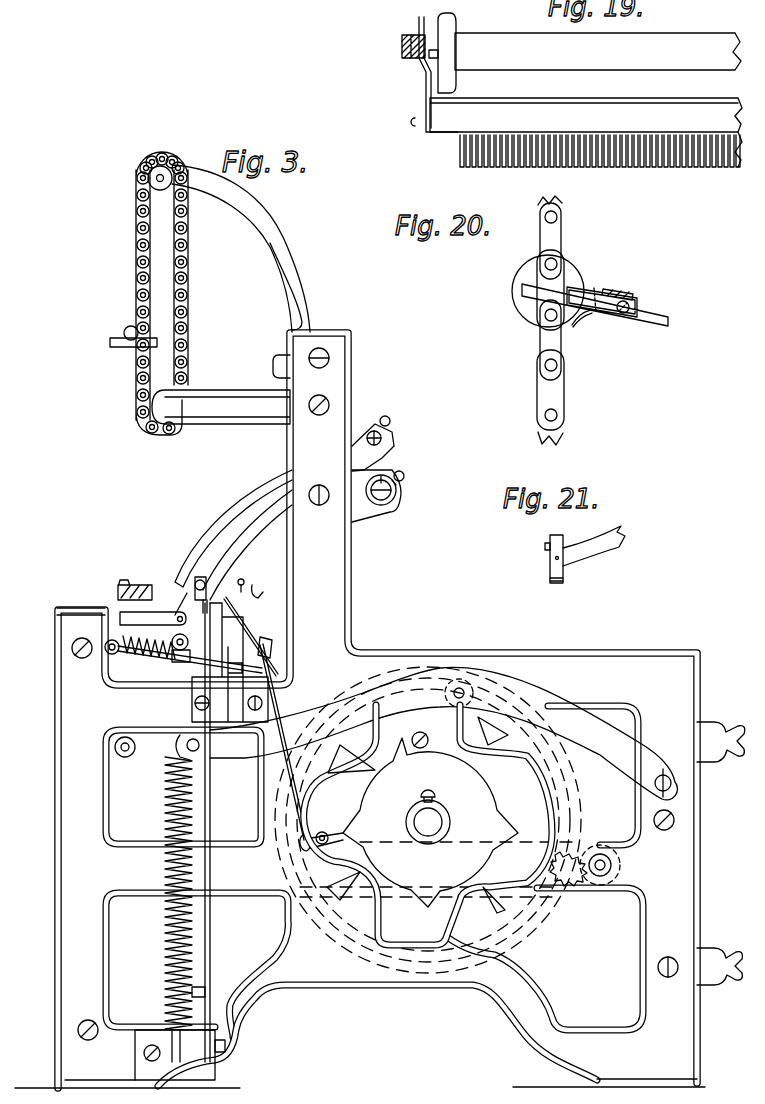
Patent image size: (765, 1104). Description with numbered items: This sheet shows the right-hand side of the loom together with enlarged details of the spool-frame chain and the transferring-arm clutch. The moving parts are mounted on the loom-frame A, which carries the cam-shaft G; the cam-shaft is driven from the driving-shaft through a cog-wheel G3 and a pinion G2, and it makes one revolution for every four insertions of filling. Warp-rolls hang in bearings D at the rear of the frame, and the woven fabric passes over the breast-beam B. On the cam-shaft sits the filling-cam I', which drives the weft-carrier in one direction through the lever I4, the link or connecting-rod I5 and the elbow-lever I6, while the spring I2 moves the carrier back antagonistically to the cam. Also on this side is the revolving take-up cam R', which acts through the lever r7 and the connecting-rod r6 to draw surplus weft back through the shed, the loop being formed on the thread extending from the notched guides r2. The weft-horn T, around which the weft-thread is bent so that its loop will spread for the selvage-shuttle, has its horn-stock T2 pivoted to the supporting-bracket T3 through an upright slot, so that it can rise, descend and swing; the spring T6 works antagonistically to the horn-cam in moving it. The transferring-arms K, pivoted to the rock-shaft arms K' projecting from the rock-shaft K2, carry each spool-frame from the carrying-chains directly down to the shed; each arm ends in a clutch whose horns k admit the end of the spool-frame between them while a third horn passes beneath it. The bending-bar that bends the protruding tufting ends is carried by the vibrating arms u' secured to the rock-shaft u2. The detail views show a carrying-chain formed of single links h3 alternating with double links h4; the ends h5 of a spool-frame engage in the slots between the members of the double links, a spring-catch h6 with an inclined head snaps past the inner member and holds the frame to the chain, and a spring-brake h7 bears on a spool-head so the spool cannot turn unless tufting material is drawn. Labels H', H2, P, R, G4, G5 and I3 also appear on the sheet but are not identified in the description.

In FIG. 3, the loom-frame A is at (293, 590).
In FIG. 3, the breast-beam B is at (56, 613).
In FIG. 3, the bearings D is at (733, 740).
In FIG. 3, the brush H' is at (113, 339).
In FIG. 19, the brush H' is at (586, 100).
In FIG. 20, the brush H' is at (595, 296).
In FIG. 3, the brush chain H2 is at (140, 293).
In FIG. 20, the brush chain H2 is at (558, 387).
In FIG. 3, the single links h3 is at (186, 297).
In FIG. 3, the double links h4 is at (186, 314).
In FIG. 19, the spool-frame ends h5 is at (403, 60).
In FIG. 20, the spool-frame ends h5 is at (540, 281).
In FIG. 19, the spring-catch h6 is at (434, 68).
In FIG. 20, the spring-catch h6 is at (526, 275).
In FIG. 20, the spring-brake h7 is at (583, 327).
In FIG. 3, the vibrating arm u' is at (233, 528).
In FIG. 3, the rock-shaft u2 is at (392, 438).
In FIG. 3, the transferring-arm K is at (247, 545).
In FIG. 3, the rock-shaft K2 is at (400, 493).
In FIG. 21, the rock-shaft arm K' is at (567, 565).
In FIG. 21, the clutch horn k is at (549, 546).
In FIG. 3, the pawl P is at (248, 578).
In FIG. 3, the weft-horn T is at (188, 595).
In FIG. 3, the horn-stock T2 is at (183, 658).
In FIG. 3, the supporting-bracket T3 is at (230, 662).
In FIG. 3, the spring T6 is at (154, 621).
In FIG. 3, the lever R is at (276, 636).
In FIG. 3, the notched guides r2 is at (251, 630).
In FIG. 3, the connecting-rod r6 is at (270, 704).
In FIG. 3, the lever r7 is at (320, 834).
In FIG. 3, the take-up cam R' is at (430, 819).
In FIG. 3, the cam-shaft G is at (428, 817).
In FIG. 3, the pinion G2 is at (603, 815).
In FIG. 3, the cog-wheel G3 is at (548, 924).
In FIG. 3, the pinion G4 is at (600, 865).
In FIG. 3, the pinion G5 is at (568, 869).
In FIG. 3, the filling-cam I' is at (428, 825).
In FIG. 3, the spring I2 is at (165, 893).
In FIG. 3, the hook I3 is at (187, 747).
In FIG. 3, the lever I4 is at (443, 733).
In FIG. 3, the connecting-rod I5 is at (200, 985).
In FIG. 3, the elbow-lever I6 is at (213, 790).